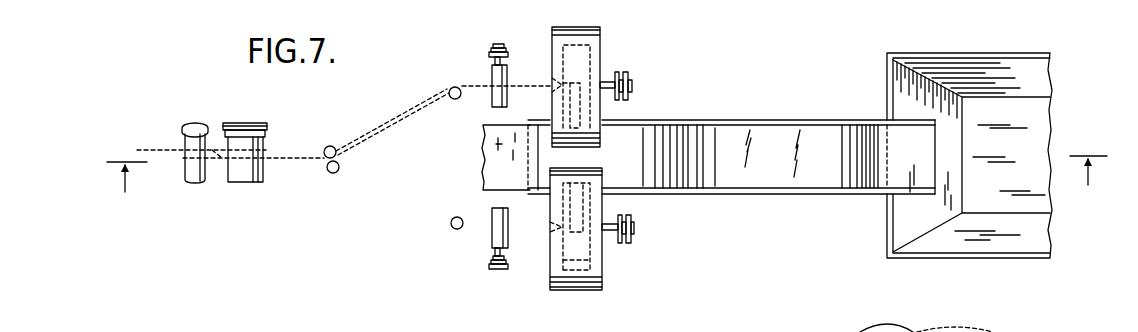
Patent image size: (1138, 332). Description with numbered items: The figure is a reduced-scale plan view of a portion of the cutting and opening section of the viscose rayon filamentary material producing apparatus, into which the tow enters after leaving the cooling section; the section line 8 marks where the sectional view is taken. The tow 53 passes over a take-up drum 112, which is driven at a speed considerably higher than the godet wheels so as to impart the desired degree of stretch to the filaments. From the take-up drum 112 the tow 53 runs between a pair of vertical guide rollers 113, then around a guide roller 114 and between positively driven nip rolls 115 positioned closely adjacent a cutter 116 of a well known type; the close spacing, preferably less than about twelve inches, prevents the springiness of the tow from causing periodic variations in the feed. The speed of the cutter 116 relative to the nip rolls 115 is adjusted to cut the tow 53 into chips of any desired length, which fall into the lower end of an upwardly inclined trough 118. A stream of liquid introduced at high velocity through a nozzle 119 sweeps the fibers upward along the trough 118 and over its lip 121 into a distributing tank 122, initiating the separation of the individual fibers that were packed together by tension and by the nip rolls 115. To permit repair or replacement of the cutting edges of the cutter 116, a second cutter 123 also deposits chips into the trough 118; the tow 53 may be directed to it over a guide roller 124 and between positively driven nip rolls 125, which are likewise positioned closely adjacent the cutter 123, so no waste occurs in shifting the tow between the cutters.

The section line 8- 8 is at (604, 175).
The tow 53 is at (150, 148).
The take-up drum 112 is at (219, 190).
The vertical guide rollers 113 is at (324, 157).
The guide roller 114 is at (451, 89).
The nip rolls 115 is at (507, 72).
The cutter 116 is at (607, 54).
The trough 118 is at (750, 182).
The nozzle 119 is at (498, 162).
The lip 121 is at (910, 172).
The distributing tank 122 is at (1002, 247).
The second cutter 123 is at (608, 271).
The guide roller 124 is at (456, 229).
The nip rolls 125 is at (508, 221).